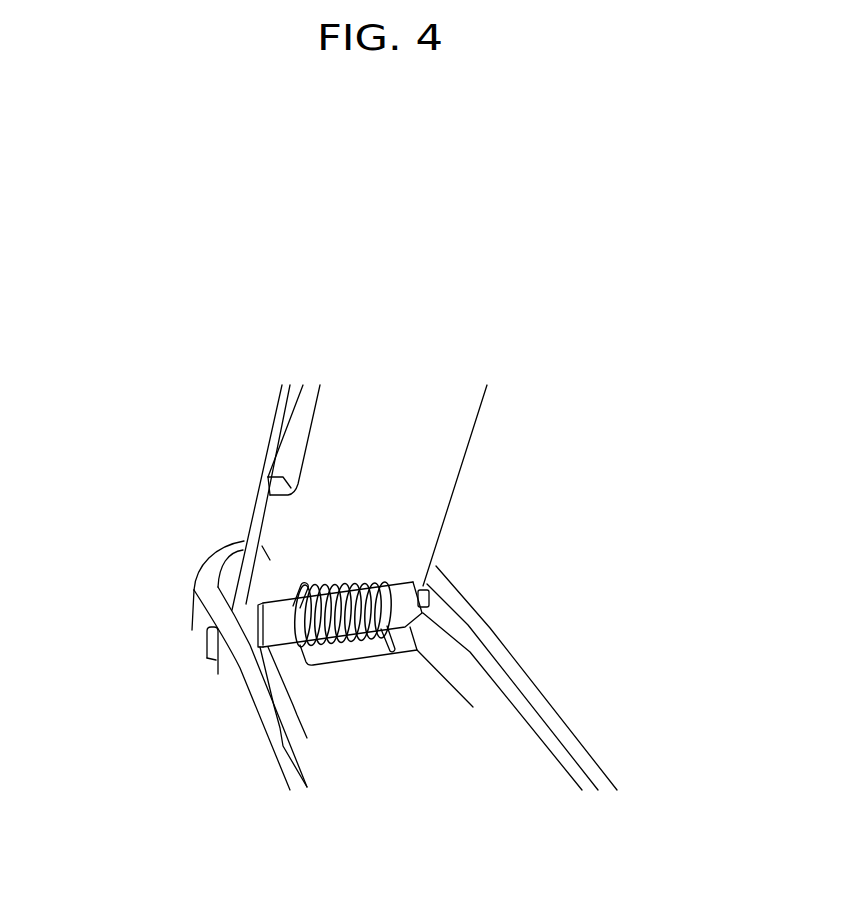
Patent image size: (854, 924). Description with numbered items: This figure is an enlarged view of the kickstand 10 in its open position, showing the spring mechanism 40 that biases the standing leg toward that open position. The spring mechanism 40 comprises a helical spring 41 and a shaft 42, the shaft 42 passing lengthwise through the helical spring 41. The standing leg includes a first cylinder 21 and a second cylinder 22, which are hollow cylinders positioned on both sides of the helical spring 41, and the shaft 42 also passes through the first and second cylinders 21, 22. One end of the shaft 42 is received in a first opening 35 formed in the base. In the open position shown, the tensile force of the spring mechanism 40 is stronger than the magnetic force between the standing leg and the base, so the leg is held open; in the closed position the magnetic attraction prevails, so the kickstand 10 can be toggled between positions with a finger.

The seat frame assembly 10 is at (263, 341).
The first cylinder 21 is at (277, 627).
The second cylinder 22 is at (473, 707).
The first opening 35 is at (208, 634).
The spring mechanism 40 is at (531, 470).
The helical spring 41 is at (340, 588).
The shaft 42 is at (427, 583).